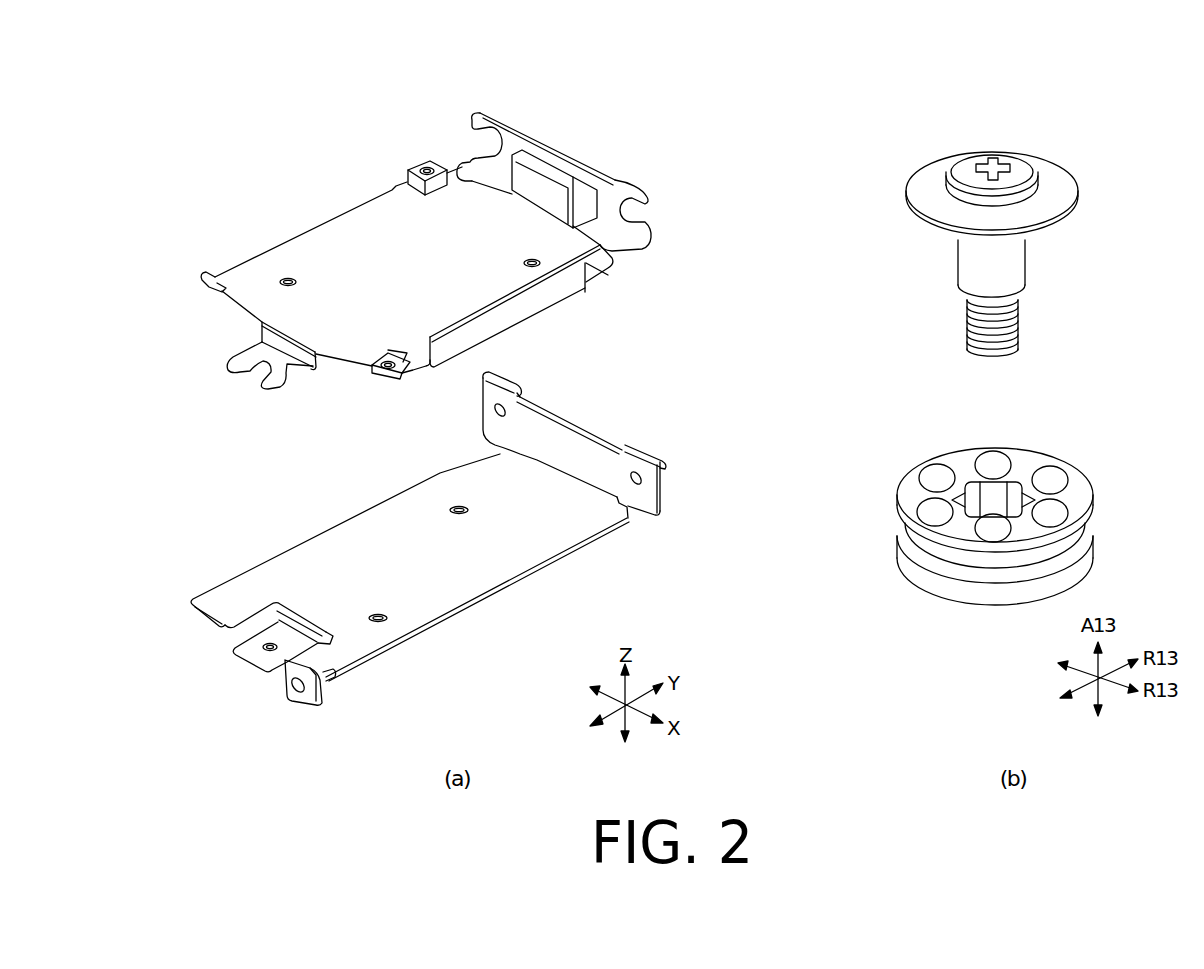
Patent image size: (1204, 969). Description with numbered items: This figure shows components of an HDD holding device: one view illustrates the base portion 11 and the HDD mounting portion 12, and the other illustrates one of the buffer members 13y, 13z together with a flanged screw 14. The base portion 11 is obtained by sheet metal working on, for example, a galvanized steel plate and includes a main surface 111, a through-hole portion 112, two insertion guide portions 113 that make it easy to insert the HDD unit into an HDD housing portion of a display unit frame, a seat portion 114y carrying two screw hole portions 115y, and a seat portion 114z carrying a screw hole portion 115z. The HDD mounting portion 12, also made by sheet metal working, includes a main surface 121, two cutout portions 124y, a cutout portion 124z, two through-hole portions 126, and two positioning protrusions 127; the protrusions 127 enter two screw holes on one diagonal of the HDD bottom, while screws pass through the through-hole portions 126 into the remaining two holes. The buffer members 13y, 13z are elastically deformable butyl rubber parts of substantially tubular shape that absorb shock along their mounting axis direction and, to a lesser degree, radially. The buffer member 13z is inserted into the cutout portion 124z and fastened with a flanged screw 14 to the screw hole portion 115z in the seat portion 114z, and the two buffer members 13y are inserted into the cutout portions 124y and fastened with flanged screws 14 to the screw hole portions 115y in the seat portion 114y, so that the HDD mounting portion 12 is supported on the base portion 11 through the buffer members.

The HDD mounting portion 12 is at (420, 230).
The main surface 121 is at (337, 233).
The cutout portions 124y is at (474, 118).
The cutout portion 124z is at (240, 357).
The through-hole portions 126 is at (418, 163).
The positioning protrusions 127 is at (208, 290).
The base portion 11 is at (451, 549).
The main surface 111 is at (377, 523).
The through-hole portion 112 is at (305, 698).
The insertion guide portions 113 is at (518, 383).
The seat portion 114y is at (573, 428).
The seat portion 114z is at (241, 673).
The screw hole portions 115y is at (496, 410).
The screw hole portion 115z is at (262, 648).
The flanged screw 14 is at (1018, 270).
The buffer members 13y is at (1002, 502).
The buffer member 13z is at (1032, 468).